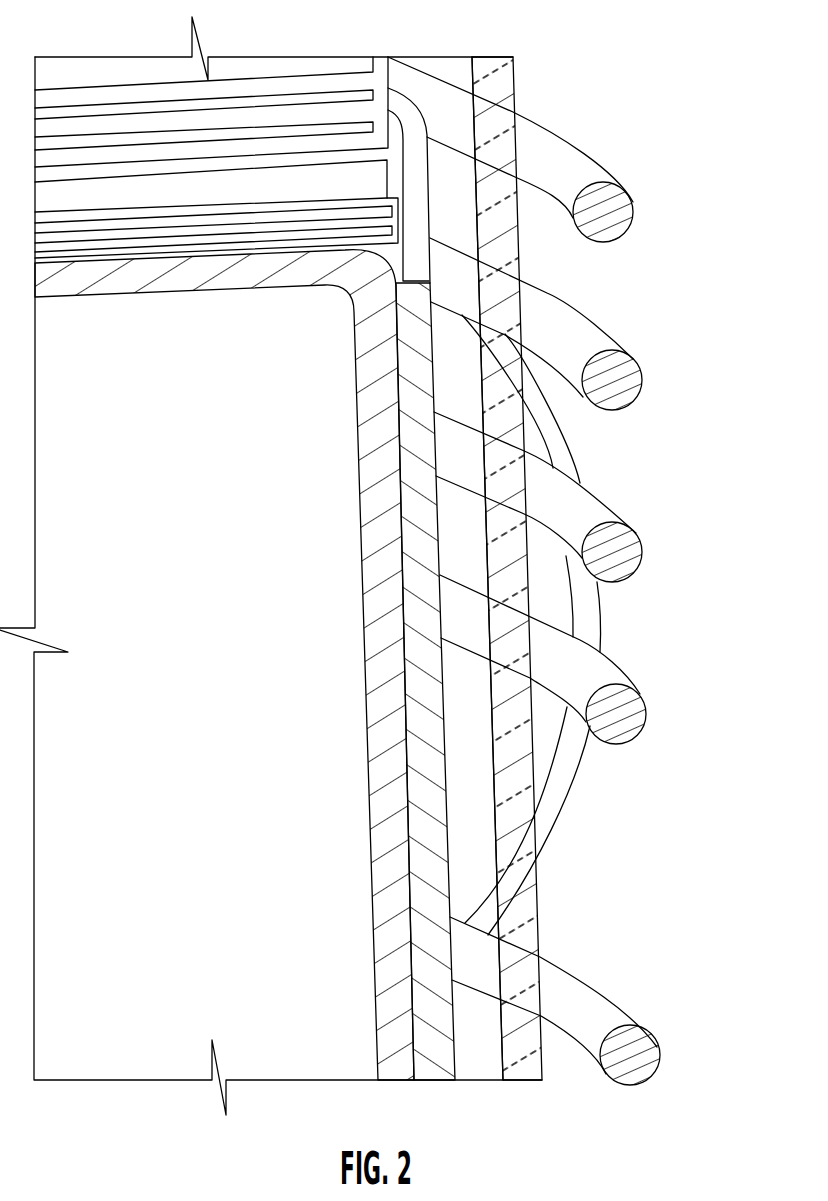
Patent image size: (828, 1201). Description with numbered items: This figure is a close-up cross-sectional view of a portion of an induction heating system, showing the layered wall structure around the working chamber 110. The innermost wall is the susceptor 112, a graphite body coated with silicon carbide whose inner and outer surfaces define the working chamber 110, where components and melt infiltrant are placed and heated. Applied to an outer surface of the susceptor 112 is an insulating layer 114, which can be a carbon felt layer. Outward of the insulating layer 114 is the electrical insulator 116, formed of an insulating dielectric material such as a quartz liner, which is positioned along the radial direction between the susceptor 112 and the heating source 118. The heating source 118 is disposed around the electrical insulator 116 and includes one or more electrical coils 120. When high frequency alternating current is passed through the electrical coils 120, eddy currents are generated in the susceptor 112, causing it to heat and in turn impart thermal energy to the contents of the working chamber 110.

The working chamber 110 is at (190, 538).
The susceptor 112 is at (366, 678).
The insulating layer 114 is at (425, 328).
The electrical insulator 116 is at (493, 203).
The heating source 118 is at (636, 478).
The electrical coils 120 is at (647, 706).